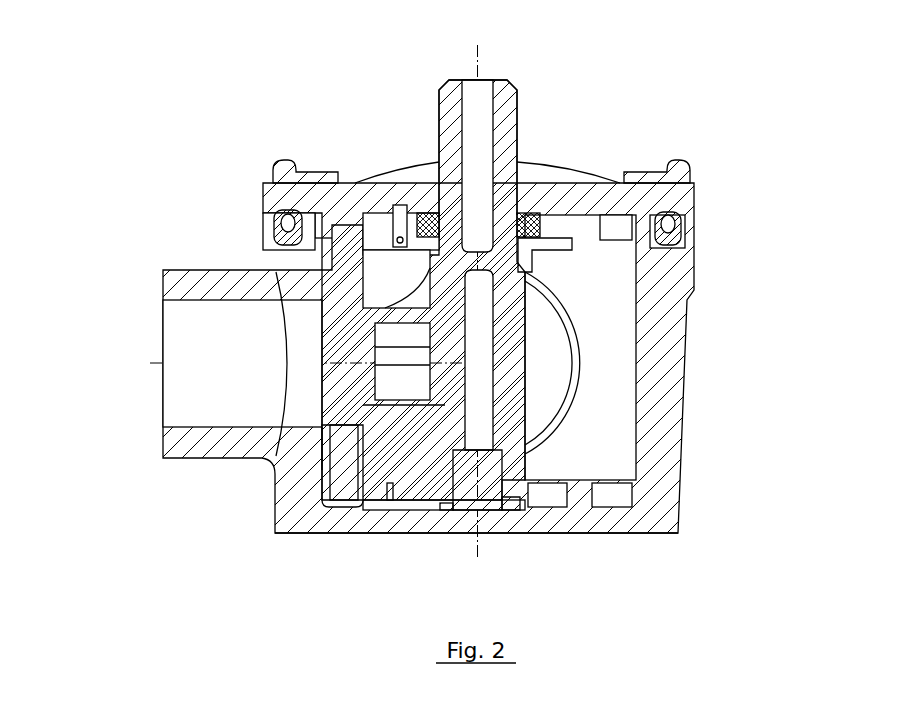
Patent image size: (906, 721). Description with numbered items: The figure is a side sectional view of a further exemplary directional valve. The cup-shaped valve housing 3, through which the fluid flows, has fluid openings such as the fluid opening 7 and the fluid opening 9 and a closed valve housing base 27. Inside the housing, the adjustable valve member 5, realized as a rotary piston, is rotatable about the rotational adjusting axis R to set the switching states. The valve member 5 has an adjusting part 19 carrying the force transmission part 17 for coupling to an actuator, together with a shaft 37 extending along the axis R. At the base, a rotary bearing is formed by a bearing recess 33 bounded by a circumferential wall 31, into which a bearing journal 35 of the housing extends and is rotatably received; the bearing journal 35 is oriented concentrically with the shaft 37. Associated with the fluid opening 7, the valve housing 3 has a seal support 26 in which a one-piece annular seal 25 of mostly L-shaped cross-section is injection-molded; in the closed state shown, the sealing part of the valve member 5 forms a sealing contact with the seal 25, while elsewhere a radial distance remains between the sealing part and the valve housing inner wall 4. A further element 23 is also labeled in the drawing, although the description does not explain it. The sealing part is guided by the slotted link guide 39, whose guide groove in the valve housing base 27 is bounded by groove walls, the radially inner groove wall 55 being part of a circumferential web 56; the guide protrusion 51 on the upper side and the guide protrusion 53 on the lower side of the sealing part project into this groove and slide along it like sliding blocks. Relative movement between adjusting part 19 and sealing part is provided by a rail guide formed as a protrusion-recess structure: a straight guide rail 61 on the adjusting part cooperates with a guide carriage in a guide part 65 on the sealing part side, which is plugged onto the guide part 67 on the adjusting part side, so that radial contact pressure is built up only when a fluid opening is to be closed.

The valve housing 3 is at (700, 258).
The valve housing inner wall 4 is at (612, 255).
The valve member 5 is at (443, 73).
The fluid opening 7 is at (180, 325).
The fluid opening 9 is at (538, 316).
The force transmission part 17 is at (519, 120).
The adjusting part 19 is at (436, 503).
The sealing ring 23 is at (428, 357).
The seal 25 is at (318, 254).
The seal support 26 is at (312, 446).
The valve housing base 27 is at (386, 525).
The wall 31 is at (516, 490).
The bearing recess 33 is at (468, 478).
The bearing journal 35 is at (488, 488).
The shaft 37 is at (505, 196).
The slotted link guide 39 is at (282, 630).
The guide protrusion 51 is at (365, 228).
The guide protrusion 53 is at (342, 498).
The groove wall 55 is at (600, 488).
The circumferential web 56 is at (578, 484).
The guide rail 61 is at (430, 345).
The guide part 65 is at (420, 330).
The guide part 67 is at (400, 305).
The rotational adjusting axis R is at (478, 64).